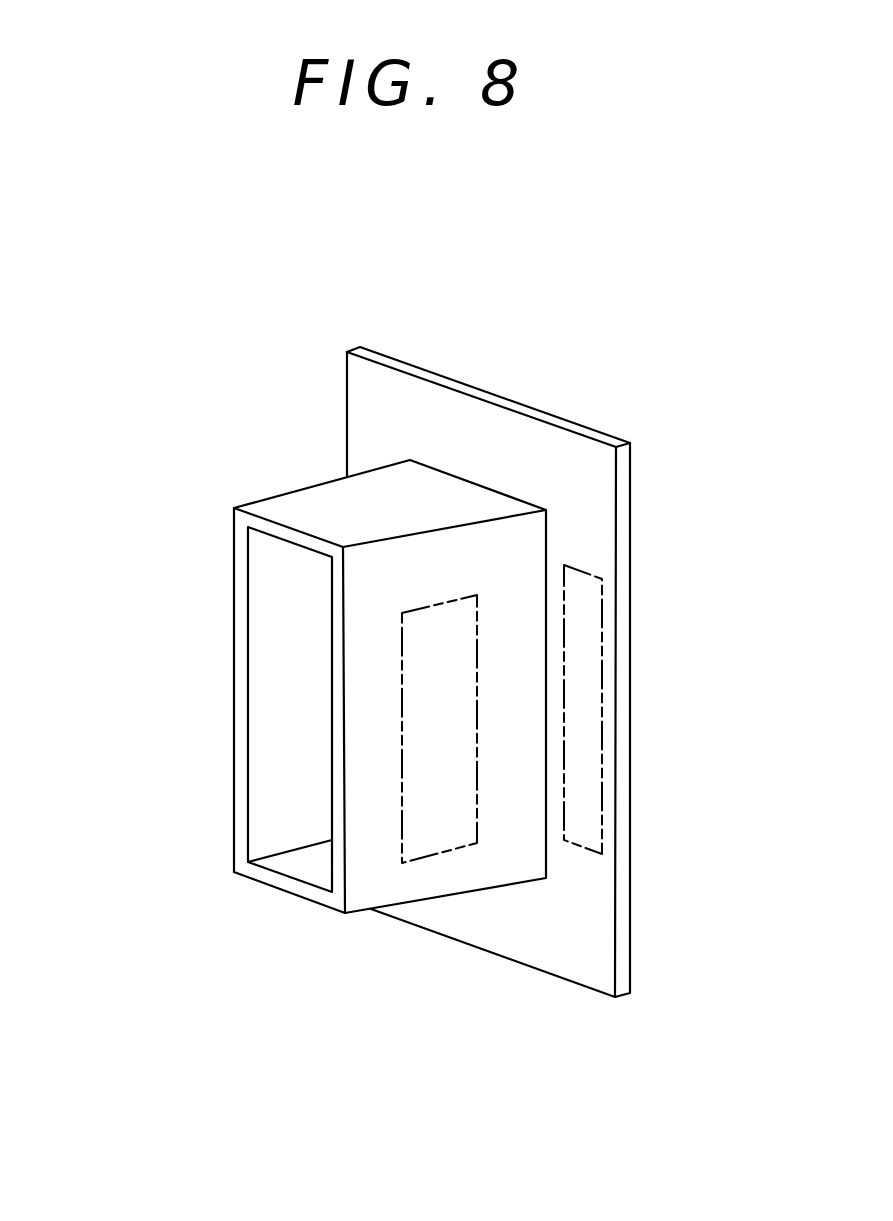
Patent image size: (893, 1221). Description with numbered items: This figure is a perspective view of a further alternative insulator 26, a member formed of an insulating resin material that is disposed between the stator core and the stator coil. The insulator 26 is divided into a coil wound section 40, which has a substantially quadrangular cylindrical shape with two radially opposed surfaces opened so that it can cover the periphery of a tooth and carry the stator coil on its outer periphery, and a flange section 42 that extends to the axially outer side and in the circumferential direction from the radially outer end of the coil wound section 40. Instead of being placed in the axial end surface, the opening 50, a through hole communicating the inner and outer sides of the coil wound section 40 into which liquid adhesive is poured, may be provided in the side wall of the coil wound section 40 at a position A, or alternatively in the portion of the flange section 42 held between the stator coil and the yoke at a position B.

The insulator 26 is at (302, 410).
The coil wound section 40 is at (333, 512).
The flange section 42 is at (572, 493).
The opening 50 is at (432, 767).
The position A is at (433, 855).
The position B is at (603, 735).